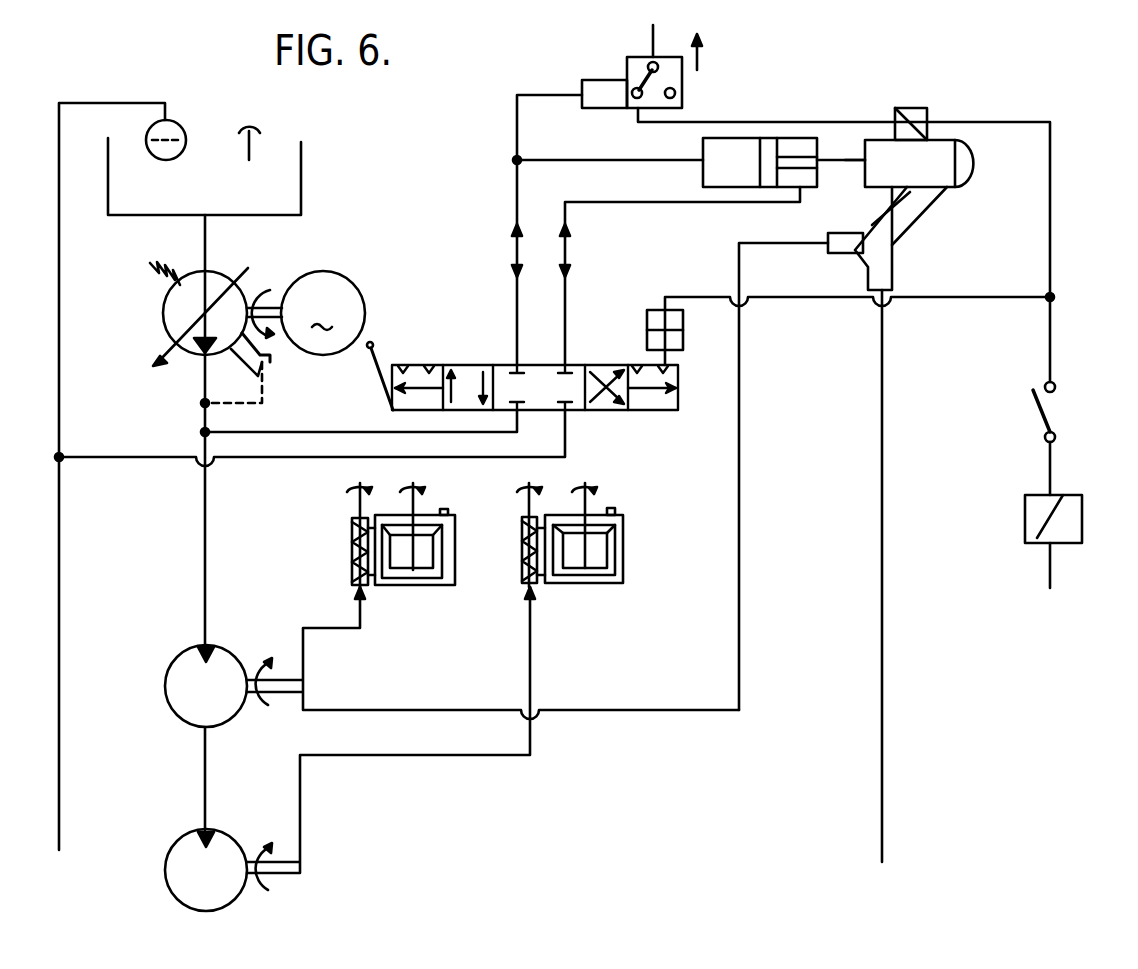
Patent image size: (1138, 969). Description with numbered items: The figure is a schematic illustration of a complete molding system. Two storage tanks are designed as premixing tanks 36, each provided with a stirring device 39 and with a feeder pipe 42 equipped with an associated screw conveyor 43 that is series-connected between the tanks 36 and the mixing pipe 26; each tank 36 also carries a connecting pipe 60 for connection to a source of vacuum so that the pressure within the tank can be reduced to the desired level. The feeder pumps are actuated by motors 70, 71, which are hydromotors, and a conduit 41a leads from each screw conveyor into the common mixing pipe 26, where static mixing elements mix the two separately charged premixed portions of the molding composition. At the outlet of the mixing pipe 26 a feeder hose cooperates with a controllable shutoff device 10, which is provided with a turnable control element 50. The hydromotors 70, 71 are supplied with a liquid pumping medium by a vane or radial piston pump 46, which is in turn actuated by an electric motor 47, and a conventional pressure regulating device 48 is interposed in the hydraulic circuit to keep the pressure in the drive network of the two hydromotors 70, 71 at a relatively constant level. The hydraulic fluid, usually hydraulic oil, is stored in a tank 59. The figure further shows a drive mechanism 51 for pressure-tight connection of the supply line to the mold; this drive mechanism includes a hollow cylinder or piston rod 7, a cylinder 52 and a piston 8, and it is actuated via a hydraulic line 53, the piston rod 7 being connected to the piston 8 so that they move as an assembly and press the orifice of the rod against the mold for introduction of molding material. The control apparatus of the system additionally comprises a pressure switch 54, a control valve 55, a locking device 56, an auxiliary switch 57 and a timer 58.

The tank 59 is at (303, 168).
The vane or radial piston pump 46 is at (212, 287).
The electric motor 47 is at (345, 297).
The pressure regulating device 48 is at (270, 364).
The control valve 55 is at (372, 343).
The hydraulic line 53 is at (557, 160).
The locking device 56 is at (686, 322).
The pressure switch 54 is at (636, 65).
The cylinder 52 is at (705, 175).
The piston 8 is at (767, 187).
The drive mechanism 51 is at (841, 153).
The hollow cylinder or piston rod 7 is at (852, 165).
The turnable control element 50 is at (916, 114).
The controllable shutoff device 10 is at (940, 145).
The mixing pipe 26 is at (890, 233).
The conduit 41a is at (741, 480).
The auxiliary switch 57 is at (1058, 428).
The timer 58 is at (1080, 495).
The screw conveyor 43 is at (352, 538).
The feeder pipe 42 is at (352, 567).
The premixing tank 36 is at (402, 583).
The stirring device 39 is at (400, 540).
The connecting pipe 60 is at (444, 510).
The hydromotor 70 is at (178, 660).
The hydromotor 71 is at (178, 850).